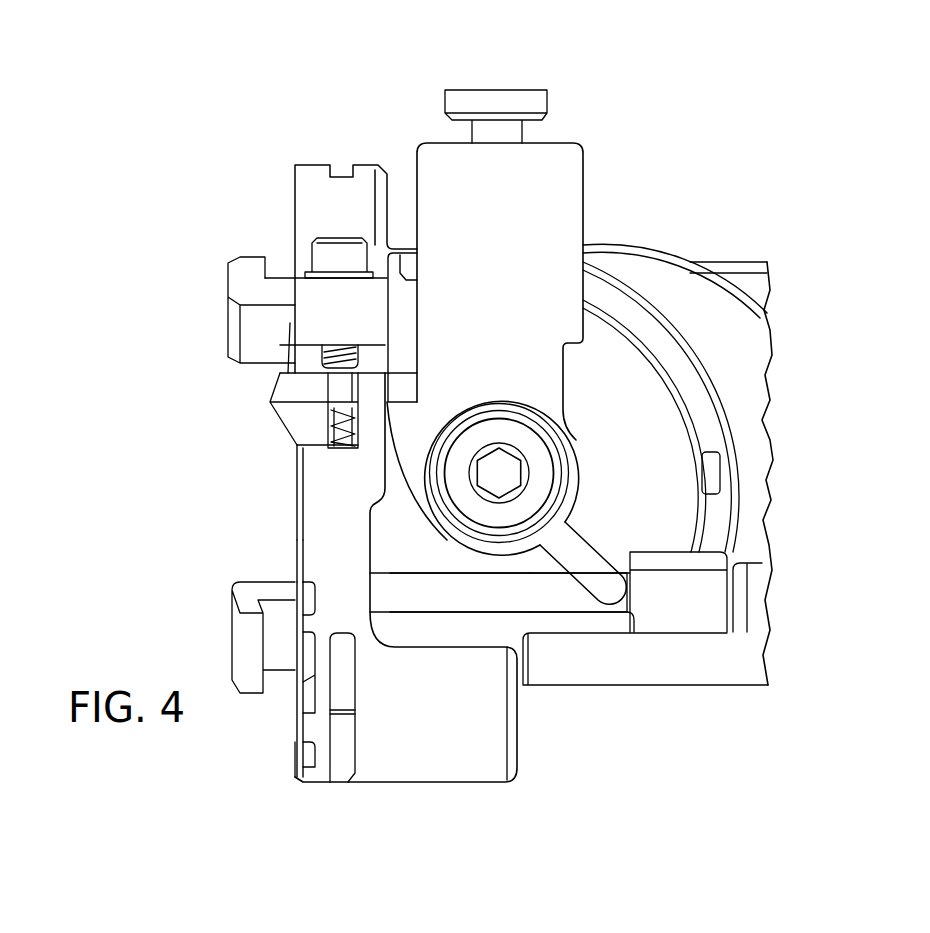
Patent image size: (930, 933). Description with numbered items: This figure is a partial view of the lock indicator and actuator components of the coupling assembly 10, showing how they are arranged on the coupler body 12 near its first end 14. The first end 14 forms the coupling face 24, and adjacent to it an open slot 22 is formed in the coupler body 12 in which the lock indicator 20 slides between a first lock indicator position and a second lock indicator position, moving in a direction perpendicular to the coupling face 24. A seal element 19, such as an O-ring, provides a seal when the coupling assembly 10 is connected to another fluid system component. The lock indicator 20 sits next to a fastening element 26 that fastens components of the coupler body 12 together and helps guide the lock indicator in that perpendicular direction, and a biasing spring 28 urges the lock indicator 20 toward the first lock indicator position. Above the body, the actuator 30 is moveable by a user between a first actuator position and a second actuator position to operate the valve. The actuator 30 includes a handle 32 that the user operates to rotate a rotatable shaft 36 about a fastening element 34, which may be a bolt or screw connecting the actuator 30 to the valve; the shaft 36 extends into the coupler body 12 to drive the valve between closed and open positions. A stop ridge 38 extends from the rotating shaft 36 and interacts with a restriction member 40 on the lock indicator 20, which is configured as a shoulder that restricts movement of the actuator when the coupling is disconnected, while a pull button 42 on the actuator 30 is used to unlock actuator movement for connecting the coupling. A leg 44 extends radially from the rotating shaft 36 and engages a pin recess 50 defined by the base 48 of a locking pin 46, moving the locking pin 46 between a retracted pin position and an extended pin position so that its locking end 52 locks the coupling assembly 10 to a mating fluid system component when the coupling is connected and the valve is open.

The coupling assembly 10 is at (382, 113).
The coupler body 12 is at (512, 768).
The first end 14 is at (305, 753).
The seal element 19 is at (300, 555).
The lock indicator 20 is at (276, 427).
The open slot 22 is at (305, 357).
The coupling face 24 is at (300, 512).
The fastening element 26 is at (333, 253).
The biasing spring 28 is at (328, 445).
The actuator 30 is at (588, 140).
The handle 32 is at (570, 170).
The fastening element 34 is at (517, 435).
The rotatable shaft 36 is at (572, 467).
The stop ridge 38 is at (400, 410).
The restriction member 40 is at (403, 392).
The pull button 42 is at (493, 102).
The leg 44 is at (597, 565).
The locking pin 46 is at (487, 600).
The base 48 is at (537, 600).
The pin recess 50 is at (578, 600).
The locking end 52 is at (307, 593).